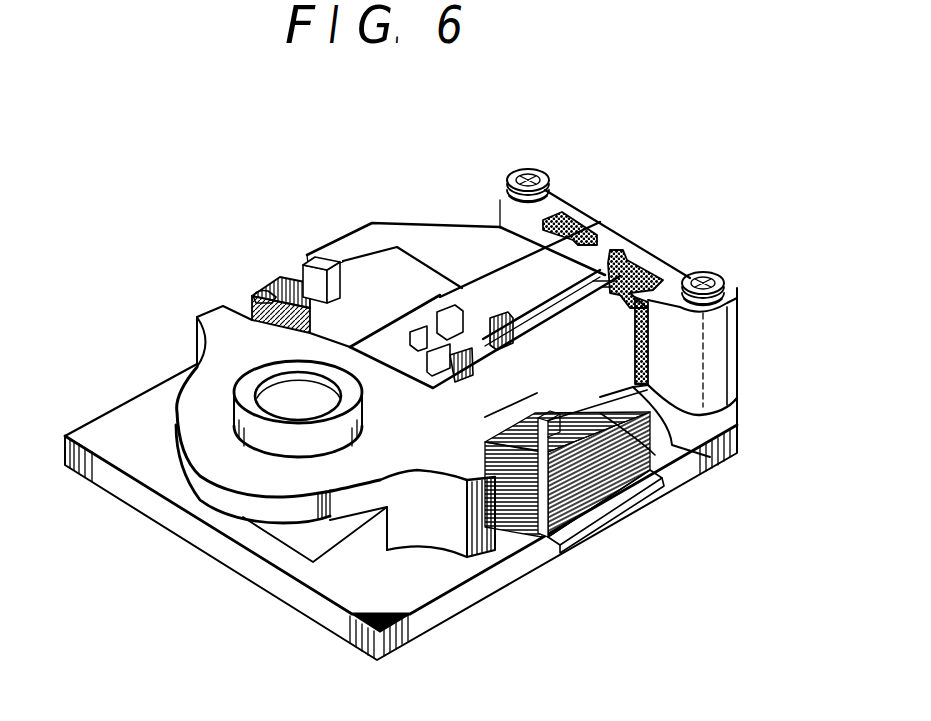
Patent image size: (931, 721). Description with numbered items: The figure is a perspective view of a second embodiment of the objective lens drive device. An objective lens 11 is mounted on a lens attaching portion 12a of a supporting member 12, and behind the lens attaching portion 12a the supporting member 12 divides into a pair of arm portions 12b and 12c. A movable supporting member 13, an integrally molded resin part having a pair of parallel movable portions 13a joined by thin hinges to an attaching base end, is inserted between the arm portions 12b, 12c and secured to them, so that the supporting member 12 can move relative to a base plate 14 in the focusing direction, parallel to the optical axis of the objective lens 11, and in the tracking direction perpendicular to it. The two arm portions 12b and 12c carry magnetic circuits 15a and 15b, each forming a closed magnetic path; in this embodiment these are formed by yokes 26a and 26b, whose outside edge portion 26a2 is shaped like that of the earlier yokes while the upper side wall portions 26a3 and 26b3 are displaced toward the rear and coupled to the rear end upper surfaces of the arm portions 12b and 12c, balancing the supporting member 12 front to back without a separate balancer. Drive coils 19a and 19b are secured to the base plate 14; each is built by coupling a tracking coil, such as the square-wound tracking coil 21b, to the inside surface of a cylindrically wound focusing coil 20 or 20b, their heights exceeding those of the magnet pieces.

The objective lens 11 is at (276, 407).
The supporting member 12 is at (174, 440).
The lens attaching portion 12a is at (232, 468).
The arm portion 12b is at (600, 347).
The arm portion 12c is at (412, 295).
The movable supporting member 13 is at (600, 273).
The movable portion 13a is at (617, 290).
The base plate 14 is at (280, 557).
The magnetic circuit 15a is at (517, 540).
The magnetic circuit 15b is at (249, 294).
The drive coil 19a is at (580, 530).
The drive coil 19b is at (280, 285).
The focusing coil 20 is at (657, 513).
The focusing coil 20b is at (297, 262).
The tracking coil 21b is at (470, 425).
The yoke 26a is at (700, 450).
The outside edge portion 26a2 is at (607, 512).
The upper side wall portion 26a3 is at (632, 268).
The yoke 26b is at (441, 245).
The upper side wall portion 26b3 is at (477, 248).